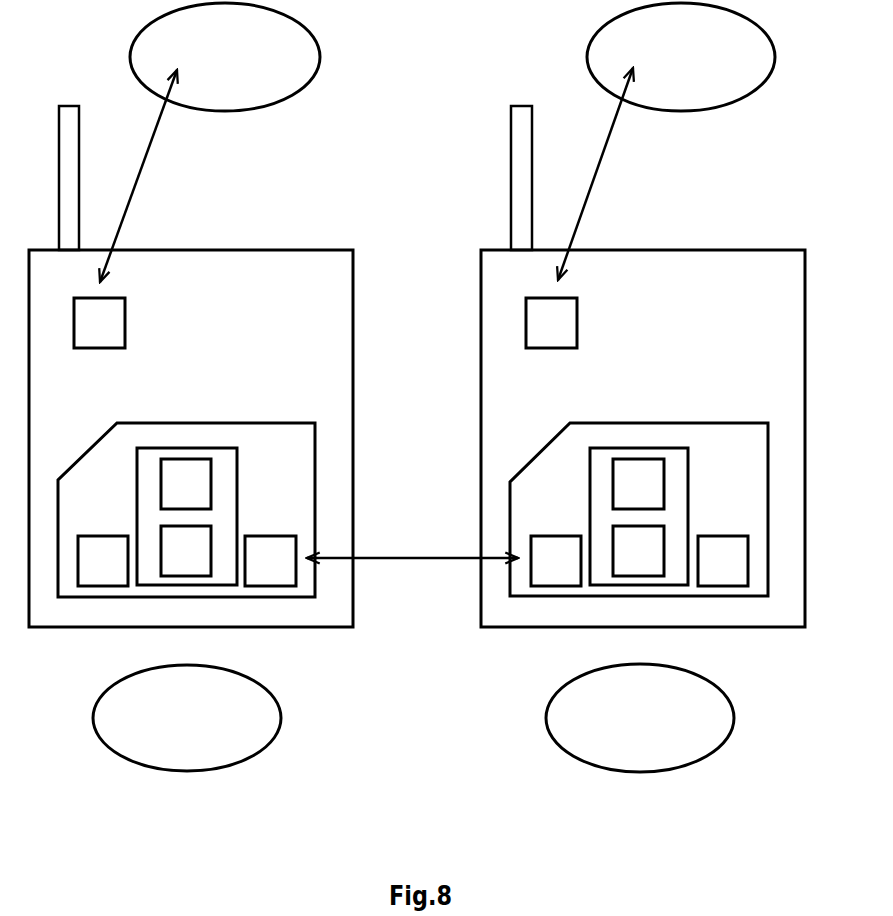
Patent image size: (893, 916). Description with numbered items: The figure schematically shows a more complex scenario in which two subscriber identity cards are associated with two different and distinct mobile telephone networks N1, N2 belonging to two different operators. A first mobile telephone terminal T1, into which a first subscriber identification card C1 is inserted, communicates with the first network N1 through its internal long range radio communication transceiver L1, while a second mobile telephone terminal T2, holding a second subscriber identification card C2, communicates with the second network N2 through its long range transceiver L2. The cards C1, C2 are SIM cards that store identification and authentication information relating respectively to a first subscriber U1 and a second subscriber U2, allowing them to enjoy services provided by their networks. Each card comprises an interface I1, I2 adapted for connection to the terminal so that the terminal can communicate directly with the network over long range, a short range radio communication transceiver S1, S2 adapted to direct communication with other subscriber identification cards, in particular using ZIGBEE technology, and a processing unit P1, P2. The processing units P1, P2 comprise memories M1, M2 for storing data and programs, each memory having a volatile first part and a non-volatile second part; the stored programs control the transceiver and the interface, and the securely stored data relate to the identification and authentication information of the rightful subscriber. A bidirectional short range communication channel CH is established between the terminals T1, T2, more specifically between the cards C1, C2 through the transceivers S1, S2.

The first mobile telephone terminal T1 is at (191, 366).
The second mobile telephone terminal T2 is at (643, 366).
The long range radio communication transceiver L1 is at (99, 323).
The long range radio communication transceiver L2 is at (551, 323).
The first mobile telephone network N1 is at (210, 142).
The second mobile telephone network N2 is at (666, 141).
The first subscriber identification card C1 is at (186, 510).
The second subscriber identification card C2 is at (639, 509).
The processing unit P1 is at (186, 484).
The processing unit P2 is at (638, 484).
The memory M1 is at (186, 551).
The memory M2 is at (638, 551).
The interface I1 is at (103, 561).
The interface I2 is at (723, 561).
The short range radio communication transceiver S1 is at (270, 561).
The short range radio communication transceiver S2 is at (556, 561).
The bidirectional short range communication channel CH is at (412, 536).
The first subscriber U1 is at (187, 718).
The second subscriber U2 is at (640, 718).